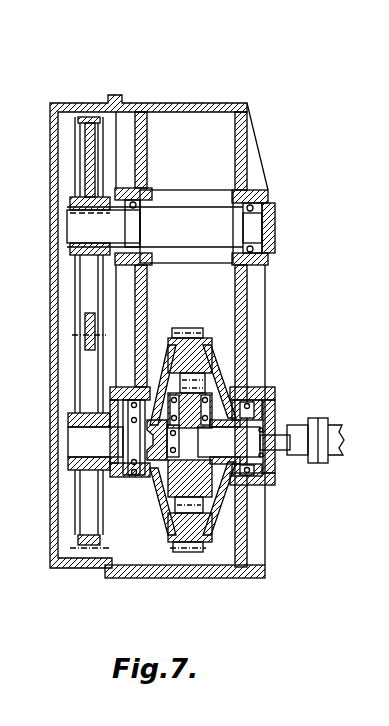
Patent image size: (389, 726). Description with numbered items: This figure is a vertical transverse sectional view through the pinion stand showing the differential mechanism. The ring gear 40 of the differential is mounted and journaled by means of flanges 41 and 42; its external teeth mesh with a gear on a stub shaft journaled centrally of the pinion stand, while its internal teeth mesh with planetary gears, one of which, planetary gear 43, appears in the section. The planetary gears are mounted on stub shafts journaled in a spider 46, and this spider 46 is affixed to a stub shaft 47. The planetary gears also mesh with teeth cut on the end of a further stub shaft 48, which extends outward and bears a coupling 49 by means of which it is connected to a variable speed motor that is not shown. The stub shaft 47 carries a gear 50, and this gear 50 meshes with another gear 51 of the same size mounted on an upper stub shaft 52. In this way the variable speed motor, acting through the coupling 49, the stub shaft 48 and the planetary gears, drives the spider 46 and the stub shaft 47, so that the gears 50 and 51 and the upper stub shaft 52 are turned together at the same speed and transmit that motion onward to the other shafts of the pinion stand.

The ring gear 40 is at (212, 362).
The flange 41 is at (160, 357).
The flange 42 is at (247, 528).
The planetary gear 43 is at (193, 393).
The spider 46 is at (247, 510).
The stub shaft 47 is at (123, 432).
The stub shaft 48 is at (244, 436).
The coupling 49 is at (325, 418).
The gear 50 is at (90, 510).
The gear 51 is at (93, 262).
The upper stub shaft 52 is at (155, 226).